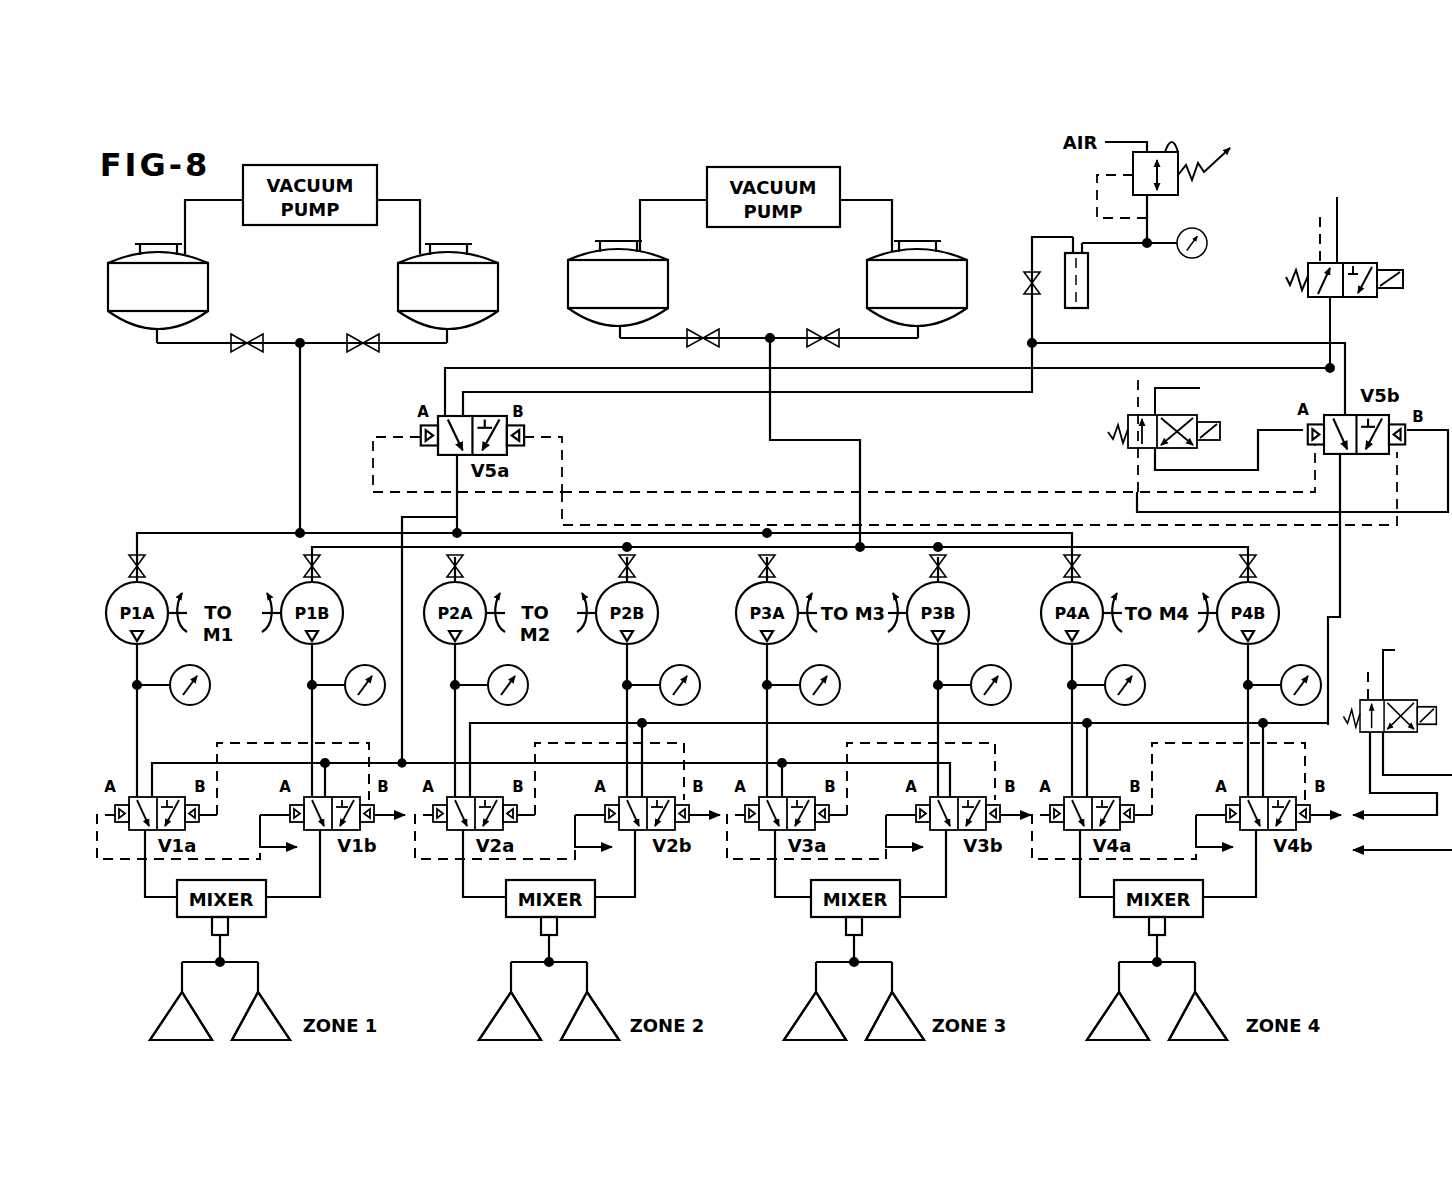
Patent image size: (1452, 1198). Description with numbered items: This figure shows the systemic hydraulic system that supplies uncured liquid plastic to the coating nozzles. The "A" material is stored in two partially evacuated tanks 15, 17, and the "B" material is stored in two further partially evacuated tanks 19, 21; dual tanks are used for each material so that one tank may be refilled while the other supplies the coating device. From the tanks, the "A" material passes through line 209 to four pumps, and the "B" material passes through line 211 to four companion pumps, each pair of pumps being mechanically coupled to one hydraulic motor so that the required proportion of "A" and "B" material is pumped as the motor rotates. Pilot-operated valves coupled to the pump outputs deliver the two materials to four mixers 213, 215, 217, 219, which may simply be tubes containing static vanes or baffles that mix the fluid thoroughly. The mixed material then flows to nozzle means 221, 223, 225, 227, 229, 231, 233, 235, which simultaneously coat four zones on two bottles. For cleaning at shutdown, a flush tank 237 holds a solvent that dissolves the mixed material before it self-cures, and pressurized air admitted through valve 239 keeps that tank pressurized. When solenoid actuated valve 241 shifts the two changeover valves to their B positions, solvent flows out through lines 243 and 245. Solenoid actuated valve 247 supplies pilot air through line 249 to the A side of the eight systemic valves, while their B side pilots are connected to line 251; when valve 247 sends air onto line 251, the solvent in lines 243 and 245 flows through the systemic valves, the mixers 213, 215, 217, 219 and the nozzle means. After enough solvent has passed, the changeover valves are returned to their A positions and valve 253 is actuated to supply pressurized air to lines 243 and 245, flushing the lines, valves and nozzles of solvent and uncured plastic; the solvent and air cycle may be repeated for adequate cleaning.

The tank 15 is at (207, 290).
The tank 17 is at (398, 292).
The tank 19 is at (670, 283).
The tank 21 is at (867, 287).
The line 209 is at (300, 427).
The line 211 is at (770, 403).
The mixer 213 is at (263, 917).
The mixer 215 is at (566, 917).
The mixer 217 is at (871, 917).
The mixer 219 is at (1174, 917).
The nozzle means 221 is at (176, 1010).
The nozzle means 223 is at (264, 1010).
The nozzle means 225 is at (505, 1010).
The nozzle means 227 is at (593, 1010).
The nozzle means 229 is at (810, 1010).
The nozzle means 231 is at (898, 1010).
The nozzle means 233 is at (1112, 1010).
The nozzle means 235 is at (1202, 1010).
The tank 237 is at (1088, 275).
The valve 239 is at (1170, 196).
The solenoid actuated valve 241 is at (1120, 425).
The line 243 is at (402, 648).
The line 245 is at (1340, 570).
The solenoid actuated valve 247 is at (1393, 733).
The line 249 is at (1380, 852).
The line 251 is at (1378, 818).
The valve 253 is at (1370, 298).